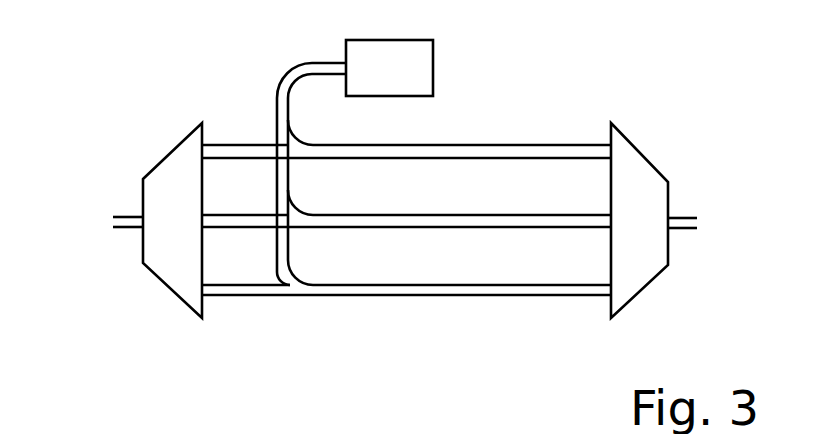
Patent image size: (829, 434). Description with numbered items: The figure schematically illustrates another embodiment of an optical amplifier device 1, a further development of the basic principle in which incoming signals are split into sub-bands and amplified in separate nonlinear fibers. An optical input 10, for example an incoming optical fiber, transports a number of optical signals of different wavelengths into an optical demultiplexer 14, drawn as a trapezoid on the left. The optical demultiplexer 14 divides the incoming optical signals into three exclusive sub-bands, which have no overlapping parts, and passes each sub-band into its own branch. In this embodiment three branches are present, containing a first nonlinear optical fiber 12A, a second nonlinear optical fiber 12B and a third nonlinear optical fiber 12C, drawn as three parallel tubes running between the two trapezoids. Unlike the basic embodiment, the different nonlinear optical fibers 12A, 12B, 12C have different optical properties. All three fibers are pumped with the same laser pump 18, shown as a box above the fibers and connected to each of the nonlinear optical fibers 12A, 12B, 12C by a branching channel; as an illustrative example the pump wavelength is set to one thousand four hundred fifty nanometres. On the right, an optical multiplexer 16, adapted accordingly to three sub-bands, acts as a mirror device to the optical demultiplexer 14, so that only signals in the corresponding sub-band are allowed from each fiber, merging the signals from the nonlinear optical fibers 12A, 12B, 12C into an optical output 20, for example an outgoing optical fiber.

The optical amplifier device 1 is at (210, 97).
The optical input 10 is at (140, 216).
The nonlinear optical fiber 12A is at (567, 152).
The nonlinear optical fiber 12B is at (480, 221).
The nonlinear optical fiber 12C is at (427, 292).
The optical demultiplexer 14 is at (182, 285).
The optical multiplexer 16 is at (633, 282).
The laser pump 18 is at (427, 55).
The optical output 20 is at (683, 223).